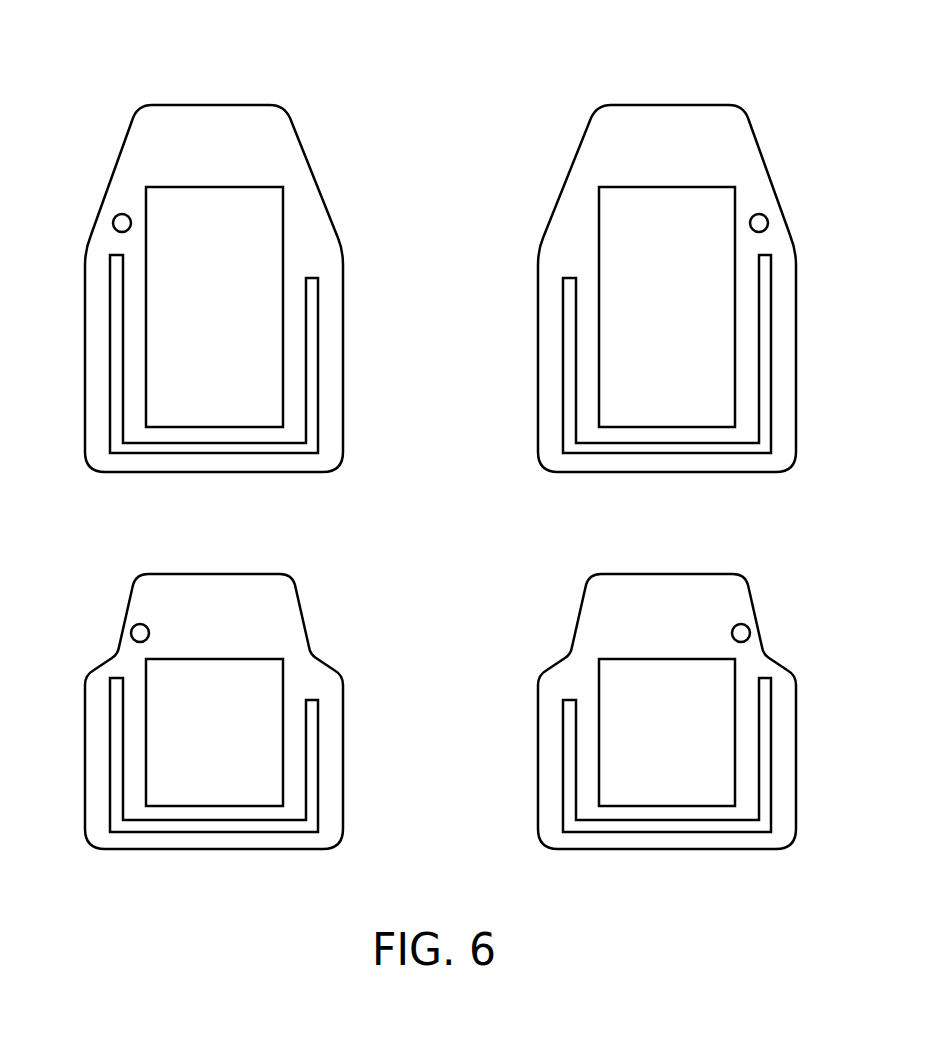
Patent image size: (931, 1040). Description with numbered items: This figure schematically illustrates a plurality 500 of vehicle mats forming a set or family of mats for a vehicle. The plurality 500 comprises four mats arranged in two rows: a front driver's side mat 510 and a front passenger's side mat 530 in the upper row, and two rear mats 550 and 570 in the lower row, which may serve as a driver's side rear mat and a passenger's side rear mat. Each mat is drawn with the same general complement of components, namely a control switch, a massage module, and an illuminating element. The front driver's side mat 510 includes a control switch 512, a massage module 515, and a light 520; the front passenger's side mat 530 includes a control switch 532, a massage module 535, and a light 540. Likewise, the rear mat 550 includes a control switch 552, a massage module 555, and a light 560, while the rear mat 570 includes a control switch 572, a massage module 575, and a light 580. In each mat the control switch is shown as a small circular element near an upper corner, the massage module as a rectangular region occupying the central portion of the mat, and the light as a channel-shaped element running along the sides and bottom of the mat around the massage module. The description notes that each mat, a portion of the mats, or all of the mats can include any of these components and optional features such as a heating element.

The plurality of vehicle mats 500 is at (792, 85).
The front driver's side mat 510 is at (160, 162).
The control switch 512 is at (122, 223).
The massage module 515 is at (265, 235).
The light 520 is at (108, 349).
The front passenger's side mat 530 is at (723, 162).
The control switch 532 is at (759, 223).
The massage module 535 is at (616, 235).
The light 540 is at (771, 349).
The rear mat 550 is at (288, 610).
The control switch 552 is at (140, 633).
The massage module 555 is at (268, 682).
The light 560 is at (108, 726).
The rear mat 570 is at (593, 610).
The control switch 572 is at (741, 633).
The massage module 575 is at (610, 682).
The light 580 is at (771, 726).